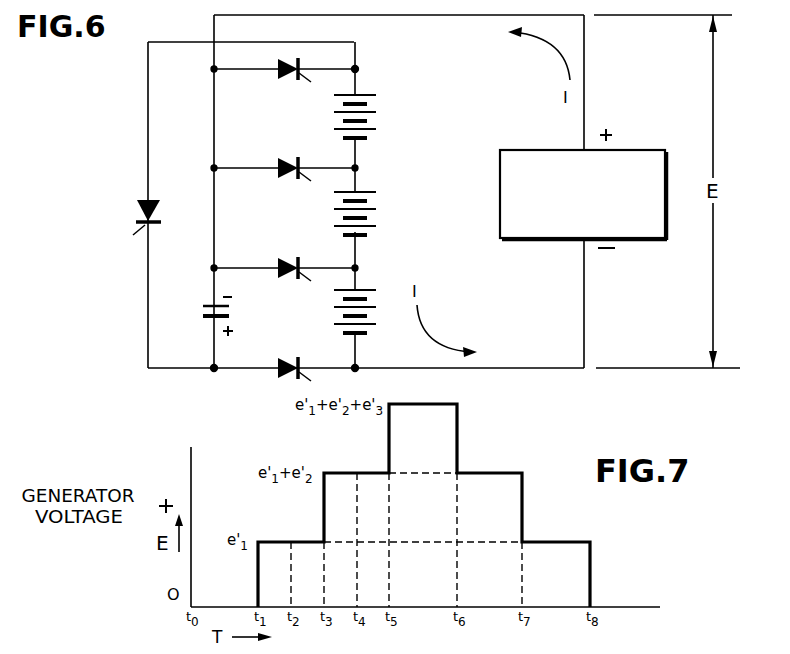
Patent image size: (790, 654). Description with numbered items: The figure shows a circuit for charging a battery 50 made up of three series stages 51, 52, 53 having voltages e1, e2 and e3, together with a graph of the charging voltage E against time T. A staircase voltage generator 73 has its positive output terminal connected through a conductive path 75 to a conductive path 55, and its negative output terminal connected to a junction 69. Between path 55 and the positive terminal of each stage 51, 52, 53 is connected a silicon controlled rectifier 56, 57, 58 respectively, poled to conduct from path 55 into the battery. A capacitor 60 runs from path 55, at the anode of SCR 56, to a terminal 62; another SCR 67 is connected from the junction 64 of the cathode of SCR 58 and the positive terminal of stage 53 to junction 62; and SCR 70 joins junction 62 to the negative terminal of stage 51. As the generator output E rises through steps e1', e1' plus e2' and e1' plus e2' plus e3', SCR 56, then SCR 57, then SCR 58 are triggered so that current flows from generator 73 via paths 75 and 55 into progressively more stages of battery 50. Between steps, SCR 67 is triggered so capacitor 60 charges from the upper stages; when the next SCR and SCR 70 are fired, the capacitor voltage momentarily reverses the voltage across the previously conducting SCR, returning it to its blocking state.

The battery 50 is at (380, 205).
The battery stage 51 is at (364, 290).
The battery stage 52 is at (366, 192).
The battery stage 53 is at (362, 95).
The conductive path 55 is at (213, 143).
The silicon controlled rectifier 56 is at (280, 262).
The silicon controlled rectifier 57 is at (278, 164).
The silicon controlled rectifier 58 is at (278, 66).
The capacitor 60 is at (211, 303).
The junction 62 is at (214, 372).
The junction 64 is at (357, 68).
The silicon controlled rectifier 67 is at (140, 200).
The junction 69 is at (356, 371).
The silicon controlled rectifier 70 is at (288, 353).
The staircase voltage generator 73 is at (560, 239).
The conductive path 75 is at (472, 15).